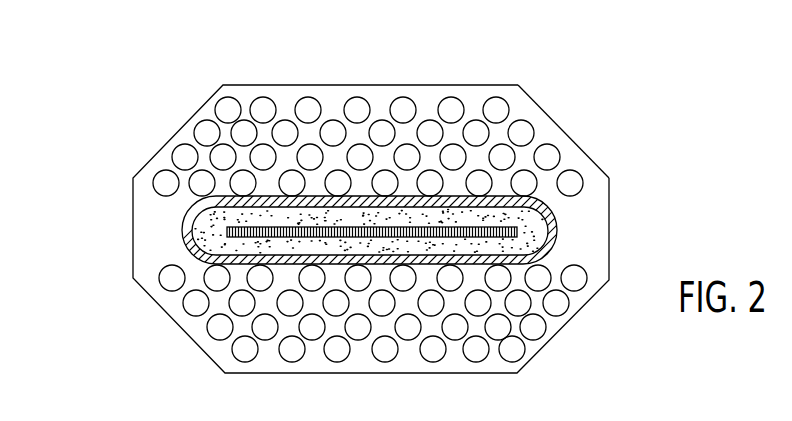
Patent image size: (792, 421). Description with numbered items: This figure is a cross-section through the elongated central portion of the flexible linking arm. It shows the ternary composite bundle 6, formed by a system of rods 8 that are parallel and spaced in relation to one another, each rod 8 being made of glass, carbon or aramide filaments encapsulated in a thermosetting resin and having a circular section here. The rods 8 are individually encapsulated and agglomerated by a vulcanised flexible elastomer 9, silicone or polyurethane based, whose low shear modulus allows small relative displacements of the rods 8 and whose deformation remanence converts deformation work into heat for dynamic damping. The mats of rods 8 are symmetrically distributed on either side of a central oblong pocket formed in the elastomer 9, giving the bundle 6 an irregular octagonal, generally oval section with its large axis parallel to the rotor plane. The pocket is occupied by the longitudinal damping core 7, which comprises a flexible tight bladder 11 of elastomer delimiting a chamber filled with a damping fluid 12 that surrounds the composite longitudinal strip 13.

The ternary composite bundle 6 is at (283, 101).
The longitudinal damping core 7 is at (357, 226).
The rods 8 is at (499, 112).
The vulcanised flexible elastomer 9 is at (572, 160).
The flexible tight bladder 11 is at (186, 246).
The damping fluid 12 is at (204, 231).
The longitudinal strip 13 is at (247, 225).